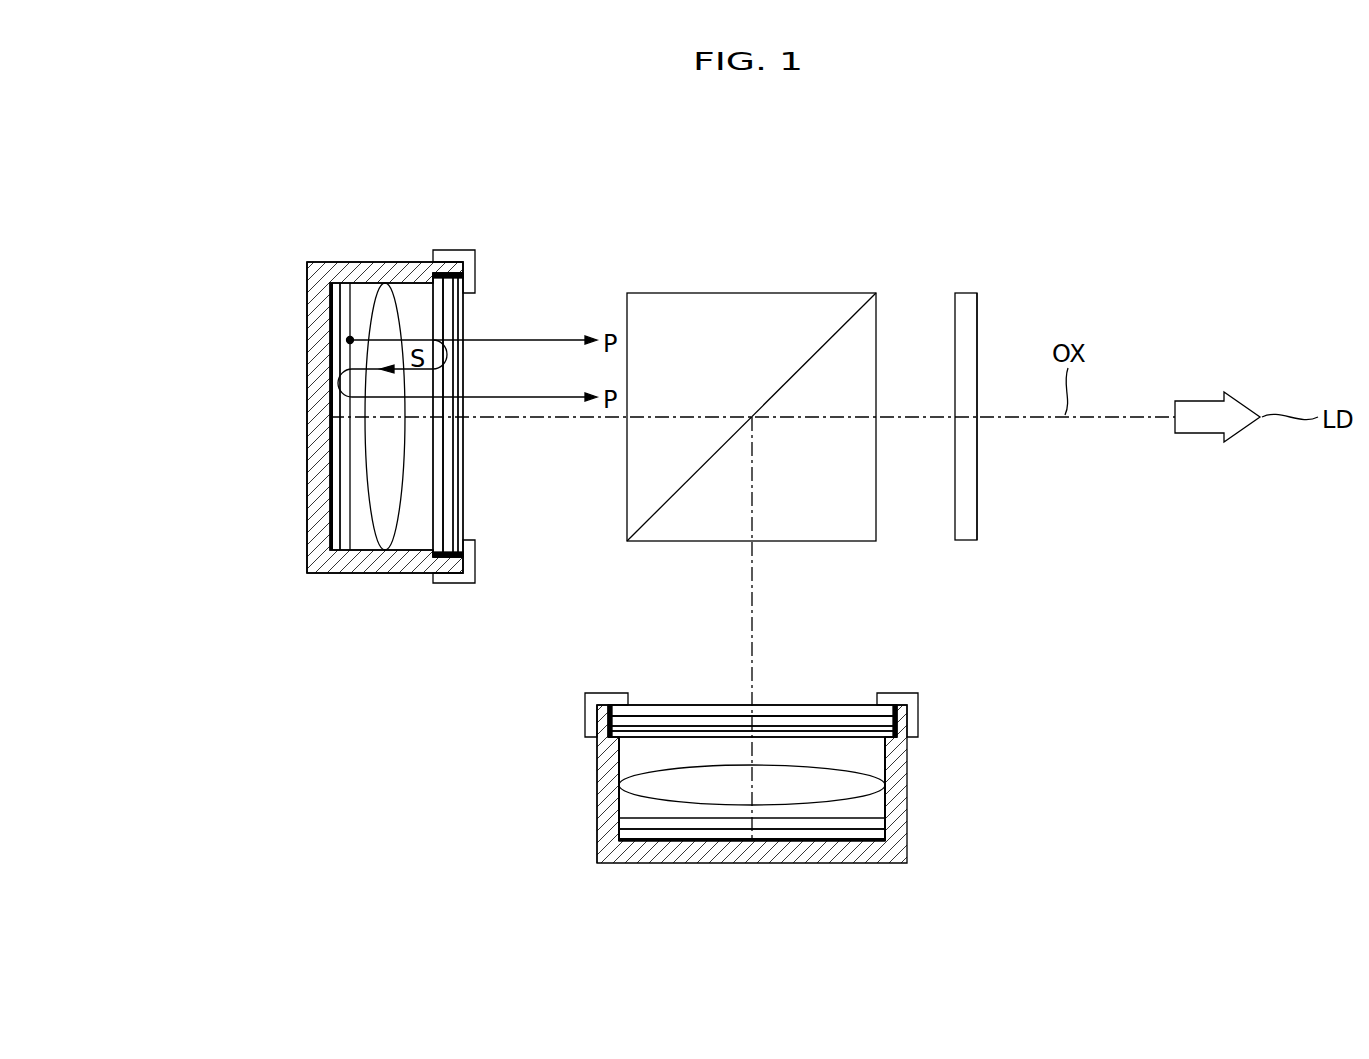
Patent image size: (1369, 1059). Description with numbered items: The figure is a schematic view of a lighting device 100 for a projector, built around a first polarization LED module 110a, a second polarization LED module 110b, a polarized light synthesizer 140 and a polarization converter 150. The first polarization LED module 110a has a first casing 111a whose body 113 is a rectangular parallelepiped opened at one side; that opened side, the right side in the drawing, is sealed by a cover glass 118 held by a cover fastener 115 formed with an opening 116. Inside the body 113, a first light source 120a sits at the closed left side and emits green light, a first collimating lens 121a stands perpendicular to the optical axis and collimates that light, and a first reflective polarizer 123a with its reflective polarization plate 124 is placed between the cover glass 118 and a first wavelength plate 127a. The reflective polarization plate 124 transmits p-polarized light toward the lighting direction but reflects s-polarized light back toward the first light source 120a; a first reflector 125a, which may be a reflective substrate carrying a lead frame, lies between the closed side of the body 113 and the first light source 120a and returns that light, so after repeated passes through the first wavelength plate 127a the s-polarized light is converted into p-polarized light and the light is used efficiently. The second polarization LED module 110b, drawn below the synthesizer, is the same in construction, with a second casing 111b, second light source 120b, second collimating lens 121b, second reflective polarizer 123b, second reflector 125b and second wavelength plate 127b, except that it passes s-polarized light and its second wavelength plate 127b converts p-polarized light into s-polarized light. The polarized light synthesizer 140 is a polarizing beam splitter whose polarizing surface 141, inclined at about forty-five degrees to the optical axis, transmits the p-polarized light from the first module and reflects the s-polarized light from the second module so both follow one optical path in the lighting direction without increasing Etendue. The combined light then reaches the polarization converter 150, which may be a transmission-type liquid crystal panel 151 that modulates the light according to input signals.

The lighting device 100 is at (204, 130).
The first polarization LED module 110a is at (320, 243).
The second polarization LED module 110b is at (567, 866).
The first casing 111a is at (295, 361).
The second casing 111b is at (585, 782).
The body 113 is at (383, 262).
The cover fastener 115 is at (453, 250).
The opening 116 is at (480, 298).
The cover glass 118 is at (463, 315).
The first light source 120a is at (350, 518).
The second light source 120b is at (870, 822).
The first collimating lens 121a is at (400, 518).
The second collimating lens 121b is at (865, 771).
The first reflective polarizer 123a is at (459, 440).
The second reflective polarizer 123b is at (790, 707).
The reflective polarization plate 124 is at (450, 478).
The first reflector 125a is at (336, 446).
The second reflector 125b is at (868, 832).
The first wavelength plate 127a is at (432, 504).
The second wavelength plate 127b is at (868, 730).
The polarized light synthesizer 140 is at (752, 280).
The polarizing surface 141 is at (826, 335).
The polarization converter 150 is at (963, 283).
The transmission-type liquid crystal panel 151 is at (977, 507).